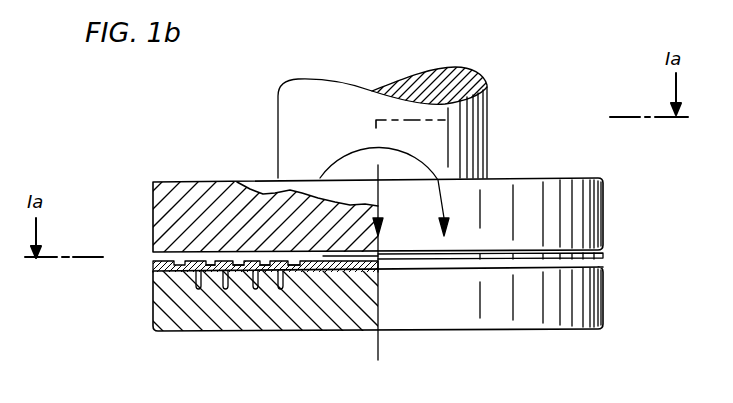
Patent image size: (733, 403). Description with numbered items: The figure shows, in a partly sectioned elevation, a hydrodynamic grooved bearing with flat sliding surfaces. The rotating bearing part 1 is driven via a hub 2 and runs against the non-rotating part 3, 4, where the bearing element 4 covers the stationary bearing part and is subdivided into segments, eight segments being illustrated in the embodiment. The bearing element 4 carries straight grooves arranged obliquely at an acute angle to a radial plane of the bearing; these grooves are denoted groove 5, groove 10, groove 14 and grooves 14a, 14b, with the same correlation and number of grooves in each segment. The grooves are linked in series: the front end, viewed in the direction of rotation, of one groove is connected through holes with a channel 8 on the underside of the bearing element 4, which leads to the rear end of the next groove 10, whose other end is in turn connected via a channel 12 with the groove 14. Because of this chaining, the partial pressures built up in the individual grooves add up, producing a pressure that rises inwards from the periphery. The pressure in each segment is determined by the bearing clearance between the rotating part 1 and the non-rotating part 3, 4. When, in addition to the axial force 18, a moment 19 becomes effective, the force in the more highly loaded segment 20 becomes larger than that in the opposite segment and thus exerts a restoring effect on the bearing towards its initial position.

The rotating bearing part 1 is at (587, 238).
The hub 2 is at (318, 100).
The non-rotating part 3 is at (184, 318).
The bearing element 4 is at (603, 259).
The groove 5 is at (176, 258).
The channel 8 is at (196, 278).
The groove 10 is at (208, 257).
The channel 12 is at (228, 318).
The groove 14 is at (238, 257).
The groove 14a is at (265, 257).
The groove 14b is at (297, 257).
The axial force 18 is at (380, 201).
The moment 19 is at (447, 201).
The more highly loaded segment 20 is at (531, 256).